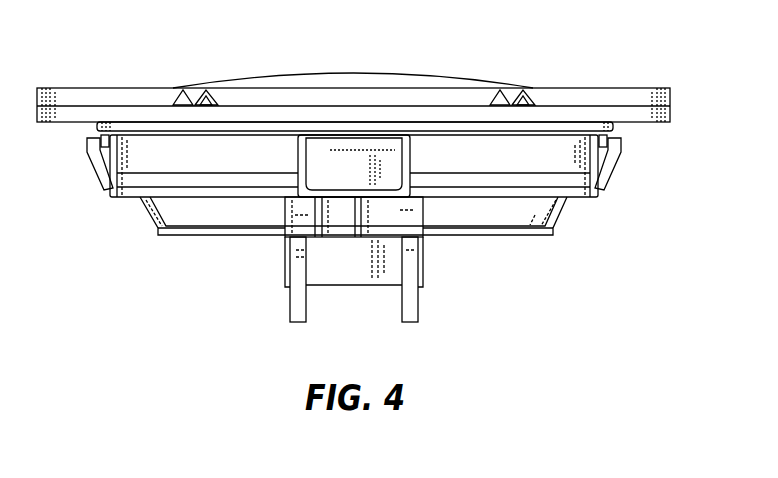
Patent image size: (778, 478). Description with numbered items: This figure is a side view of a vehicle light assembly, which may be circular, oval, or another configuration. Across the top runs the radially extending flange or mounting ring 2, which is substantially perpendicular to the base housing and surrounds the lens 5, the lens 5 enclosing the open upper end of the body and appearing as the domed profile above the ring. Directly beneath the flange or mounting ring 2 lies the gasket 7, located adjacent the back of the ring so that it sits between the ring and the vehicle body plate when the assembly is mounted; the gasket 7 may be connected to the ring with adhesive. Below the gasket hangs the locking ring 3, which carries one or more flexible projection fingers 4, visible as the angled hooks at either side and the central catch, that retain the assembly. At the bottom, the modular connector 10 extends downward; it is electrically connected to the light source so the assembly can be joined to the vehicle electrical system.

The flange or mounting ring 2 is at (635, 40).
The locking ring 3 is at (500, 178).
The flexible projection fingers 4 is at (322, 163).
The lens 5 is at (395, 78).
The gasket 7 is at (622, 119).
The modular connector 10 is at (320, 273).